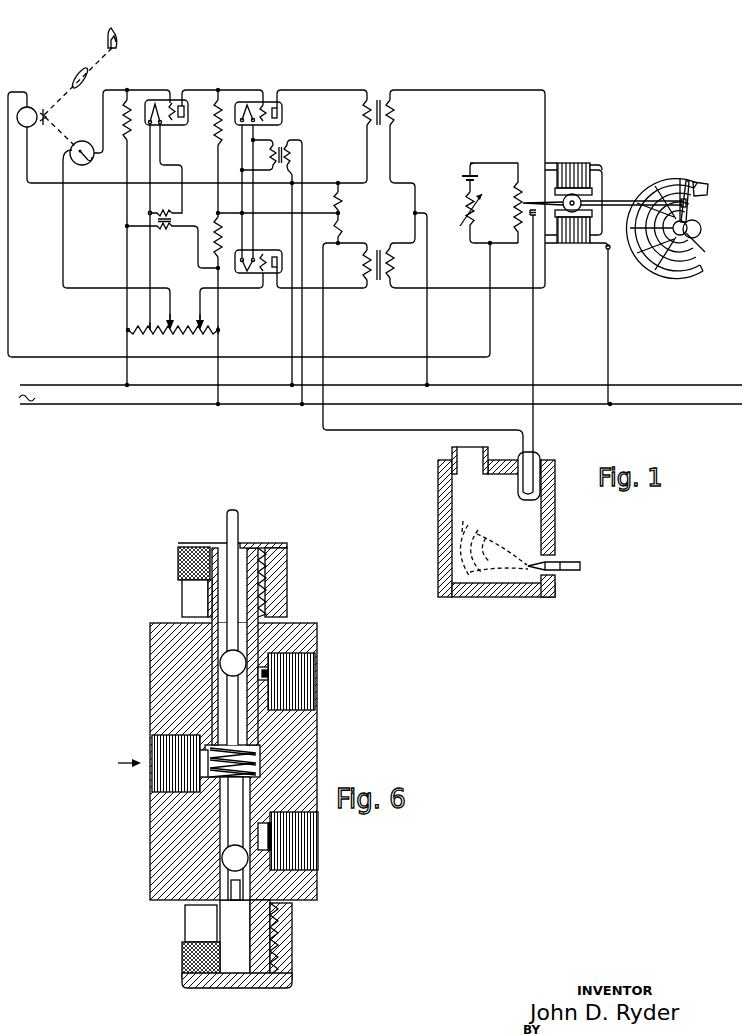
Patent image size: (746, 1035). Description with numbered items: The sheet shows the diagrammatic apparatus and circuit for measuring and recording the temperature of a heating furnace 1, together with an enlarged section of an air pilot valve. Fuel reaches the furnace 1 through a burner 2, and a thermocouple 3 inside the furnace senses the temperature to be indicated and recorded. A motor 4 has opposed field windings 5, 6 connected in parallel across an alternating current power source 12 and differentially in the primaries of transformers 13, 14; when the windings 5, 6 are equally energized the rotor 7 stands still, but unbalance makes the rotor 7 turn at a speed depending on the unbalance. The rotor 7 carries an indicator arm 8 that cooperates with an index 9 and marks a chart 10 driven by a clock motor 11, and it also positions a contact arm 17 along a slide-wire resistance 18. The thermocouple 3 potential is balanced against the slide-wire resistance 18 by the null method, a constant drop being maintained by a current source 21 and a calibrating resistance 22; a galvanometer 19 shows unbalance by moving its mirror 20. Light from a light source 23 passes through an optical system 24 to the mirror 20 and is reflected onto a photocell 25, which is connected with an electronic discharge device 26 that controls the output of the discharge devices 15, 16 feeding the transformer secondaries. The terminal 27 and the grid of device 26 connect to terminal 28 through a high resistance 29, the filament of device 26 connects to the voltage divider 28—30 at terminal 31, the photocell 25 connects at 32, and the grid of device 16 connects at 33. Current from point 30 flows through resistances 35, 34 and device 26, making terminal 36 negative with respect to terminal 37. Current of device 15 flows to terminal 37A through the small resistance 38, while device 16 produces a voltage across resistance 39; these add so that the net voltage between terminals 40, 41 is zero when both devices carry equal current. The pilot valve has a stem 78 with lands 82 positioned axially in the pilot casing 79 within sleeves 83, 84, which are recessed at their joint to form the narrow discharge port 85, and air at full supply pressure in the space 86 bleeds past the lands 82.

In FIG. 1, the heating furnace 1 is at (440, 498).
In FIG. 1, the burner 2 is at (561, 563).
In FIG. 1, the thermocouple 3 is at (541, 490).
In FIG. 1, the motor 4 is at (545, 172).
In FIG. 1, the field winding 5 is at (572, 163).
In FIG. 1, the field winding 6 is at (575, 243).
In FIG. 1, the rotor 7 is at (583, 200).
In FIG. 1, the indicator arm 8 is at (614, 205).
In FIG. 1, the index 9 is at (689, 184).
In FIG. 1, the chart 10 is at (705, 194).
In FIG. 1, the clock motor 11 is at (700, 235).
In FIG. 1, the alternating current power source 12 is at (242, 404).
In FIG. 1, the transformer 13 is at (446, 237).
In FIG. 1, the transformer 14 is at (366, 261).
In FIG. 1, the electronic discharge device 15 is at (284, 115).
In FIG. 1, the electronic discharge device 16 is at (268, 251).
In FIG. 1, the contact arm 17 is at (532, 209).
In FIG. 1, the slide-wire resistance 18 is at (510, 203).
In FIG. 1, the galvanometer 19 is at (33, 108).
In FIG. 1, the mirror 20 is at (43, 110).
In FIG. 1, the current source 21 is at (465, 180).
In FIG. 1, the calibrating resistance 22 is at (466, 207).
In FIG. 1, the light source 23 is at (120, 40).
In FIG. 1, the optical system 24 is at (90, 76).
In FIG. 1, the photocell 25 is at (88, 163).
In FIG. 1, the electronic discharge device 26 is at (177, 125).
In FIG. 1, the terminal 27 is at (127, 90).
In FIG. 1, the terminal 28 is at (128, 331).
In FIG. 1, the resistance 29 is at (119, 242).
In FIG. 1, the point 30 is at (219, 331).
In FIG. 1, the terminal 31 is at (149, 333).
In FIG. 1, the voltage divider tap 32 is at (170, 334).
In FIG. 1, the voltage divider tap 33 is at (201, 334).
In FIG. 1, the resistance 34 is at (218, 136).
In FIG. 1, the resistance 35 is at (211, 310).
In FIG. 1, the terminal 36 is at (218, 90).
In FIG. 1, the terminal 37 is at (218, 213).
In FIG. 1, the terminal 37A is at (244, 211).
In FIG. 1, the resistance 38 is at (348, 204).
In FIG. 1, the resistance 39 is at (348, 231).
In FIG. 1, the terminal 40 is at (338, 243).
In FIG. 1, the terminal 41 is at (338, 183).
In FIG. 6, the stem 78 is at (240, 526).
In FIG. 6, the pilot casing 79 is at (317, 766).
In FIG. 6, the lands 82 is at (234, 760).
In FIG. 6, the sleeve 83 is at (258, 652).
In FIG. 6, the sleeve 84 is at (258, 743).
In FIG. 6, the discharge port 85 is at (216, 653).
In FIG. 6, the space 86 is at (222, 811).